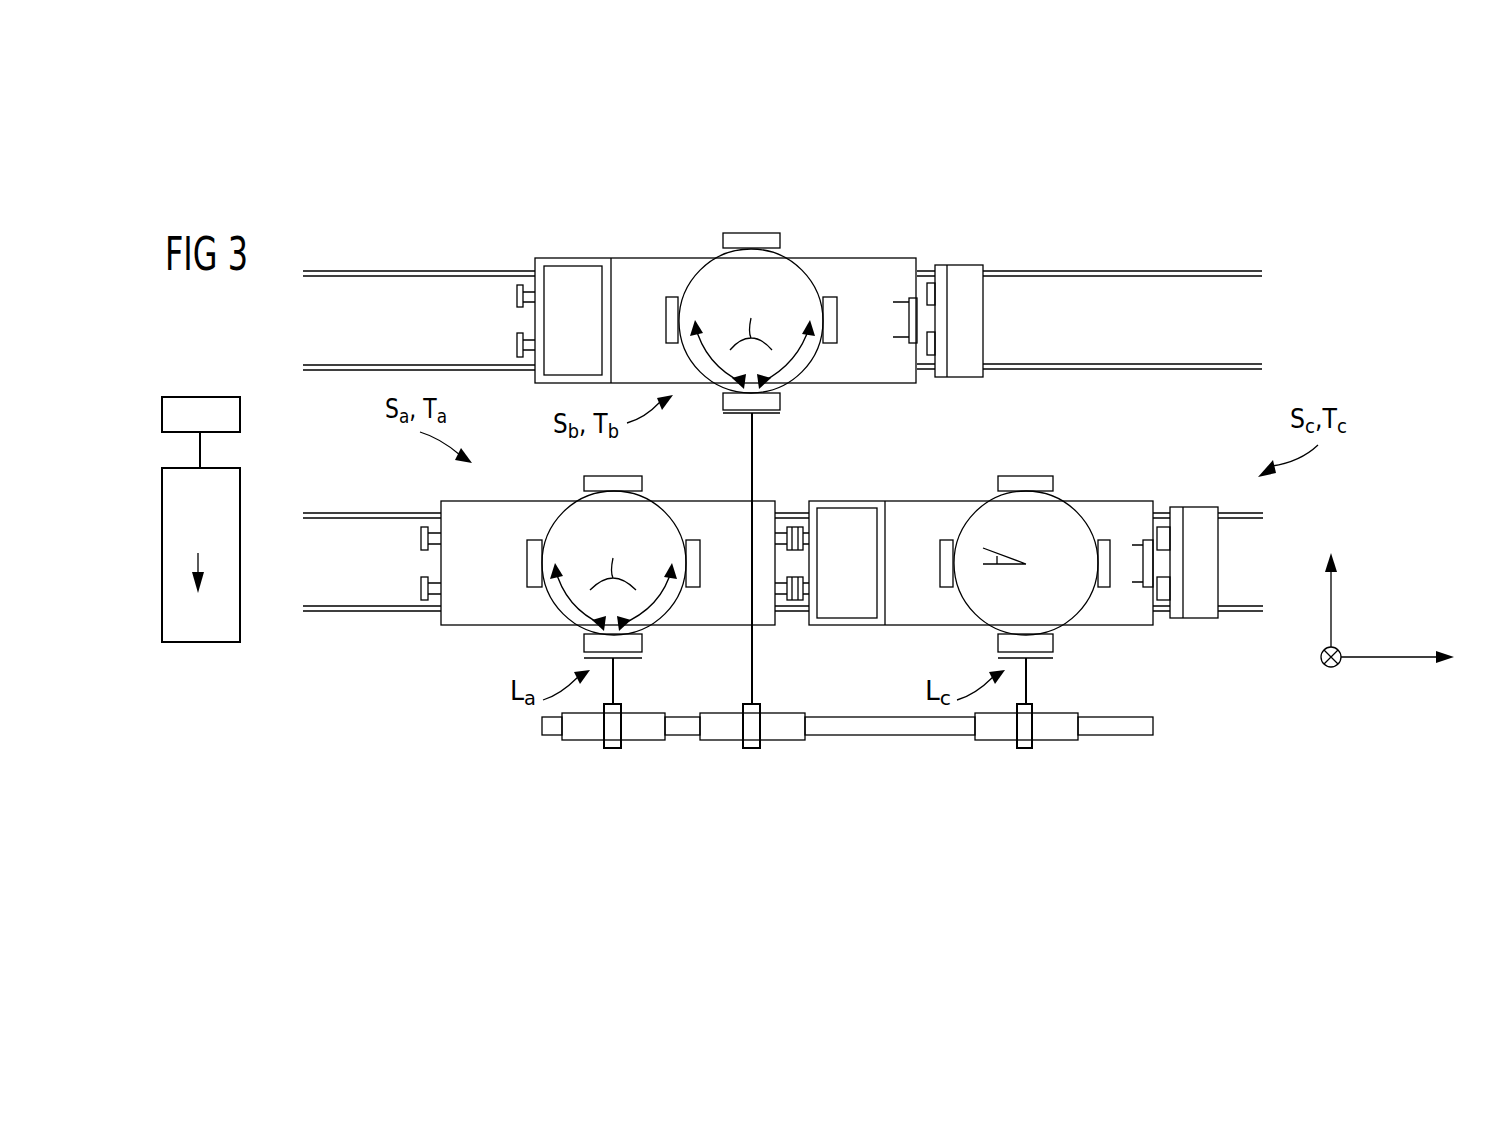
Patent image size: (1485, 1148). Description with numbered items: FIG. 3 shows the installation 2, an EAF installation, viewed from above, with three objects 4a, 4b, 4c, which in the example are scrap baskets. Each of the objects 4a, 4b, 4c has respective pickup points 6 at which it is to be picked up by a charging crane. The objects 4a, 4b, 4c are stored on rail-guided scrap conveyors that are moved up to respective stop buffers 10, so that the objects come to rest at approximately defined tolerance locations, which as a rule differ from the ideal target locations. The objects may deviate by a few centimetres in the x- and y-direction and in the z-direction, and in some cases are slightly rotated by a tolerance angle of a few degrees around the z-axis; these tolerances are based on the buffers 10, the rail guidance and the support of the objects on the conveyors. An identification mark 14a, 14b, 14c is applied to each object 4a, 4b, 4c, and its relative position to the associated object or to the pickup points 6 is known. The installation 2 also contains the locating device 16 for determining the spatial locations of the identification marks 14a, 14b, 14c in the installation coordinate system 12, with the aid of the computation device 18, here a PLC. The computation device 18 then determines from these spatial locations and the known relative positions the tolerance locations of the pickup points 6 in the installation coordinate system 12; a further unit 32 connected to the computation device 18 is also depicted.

The installation 2 is at (1368, 368).
The object 4a is at (668, 592).
The object 4b is at (807, 347).
The object 4c is at (970, 590).
The pickup points 6 is at (668, 310).
The stop buffers 10 is at (972, 310).
The installation coordinate system 12 is at (1378, 655).
The identification mark 14a is at (627, 659).
The identification mark 14b is at (763, 417).
The identification mark 14c is at (1040, 660).
The locating device 16 is at (1180, 740).
The computation device 18 is at (200, 642).
The input unit 32 is at (240, 410).